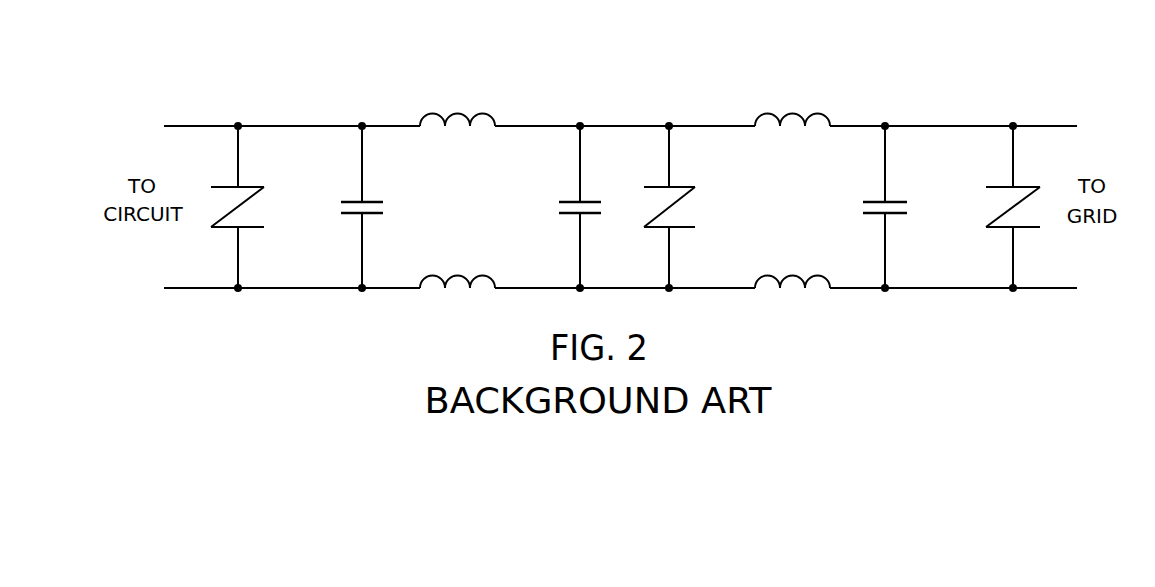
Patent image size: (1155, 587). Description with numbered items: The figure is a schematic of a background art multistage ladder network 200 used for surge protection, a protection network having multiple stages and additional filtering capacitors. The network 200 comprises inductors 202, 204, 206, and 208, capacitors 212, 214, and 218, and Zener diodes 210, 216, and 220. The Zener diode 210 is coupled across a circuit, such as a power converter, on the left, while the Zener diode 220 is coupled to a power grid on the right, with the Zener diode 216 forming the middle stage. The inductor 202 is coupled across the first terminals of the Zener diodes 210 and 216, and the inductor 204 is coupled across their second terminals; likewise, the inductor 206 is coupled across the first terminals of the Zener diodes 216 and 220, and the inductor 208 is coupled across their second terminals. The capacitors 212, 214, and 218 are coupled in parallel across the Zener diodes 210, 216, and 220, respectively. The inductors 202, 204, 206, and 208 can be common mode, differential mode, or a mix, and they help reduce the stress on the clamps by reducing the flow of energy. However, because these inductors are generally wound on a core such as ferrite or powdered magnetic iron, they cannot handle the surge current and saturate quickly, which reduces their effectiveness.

The multistage ladder network 200 is at (1132, 68).
The inductor 202 is at (457, 110).
The inductor 204 is at (457, 272).
The inductor 206 is at (792, 110).
The inductor 208 is at (815, 272).
The Zener diode 210 is at (247, 203).
The capacitor 212 is at (373, 198).
The capacitor 214 is at (570, 198).
The Zener diode 216 is at (683, 203).
The capacitor 218 is at (875, 198).
The Zener diode 220 is at (1006, 210).